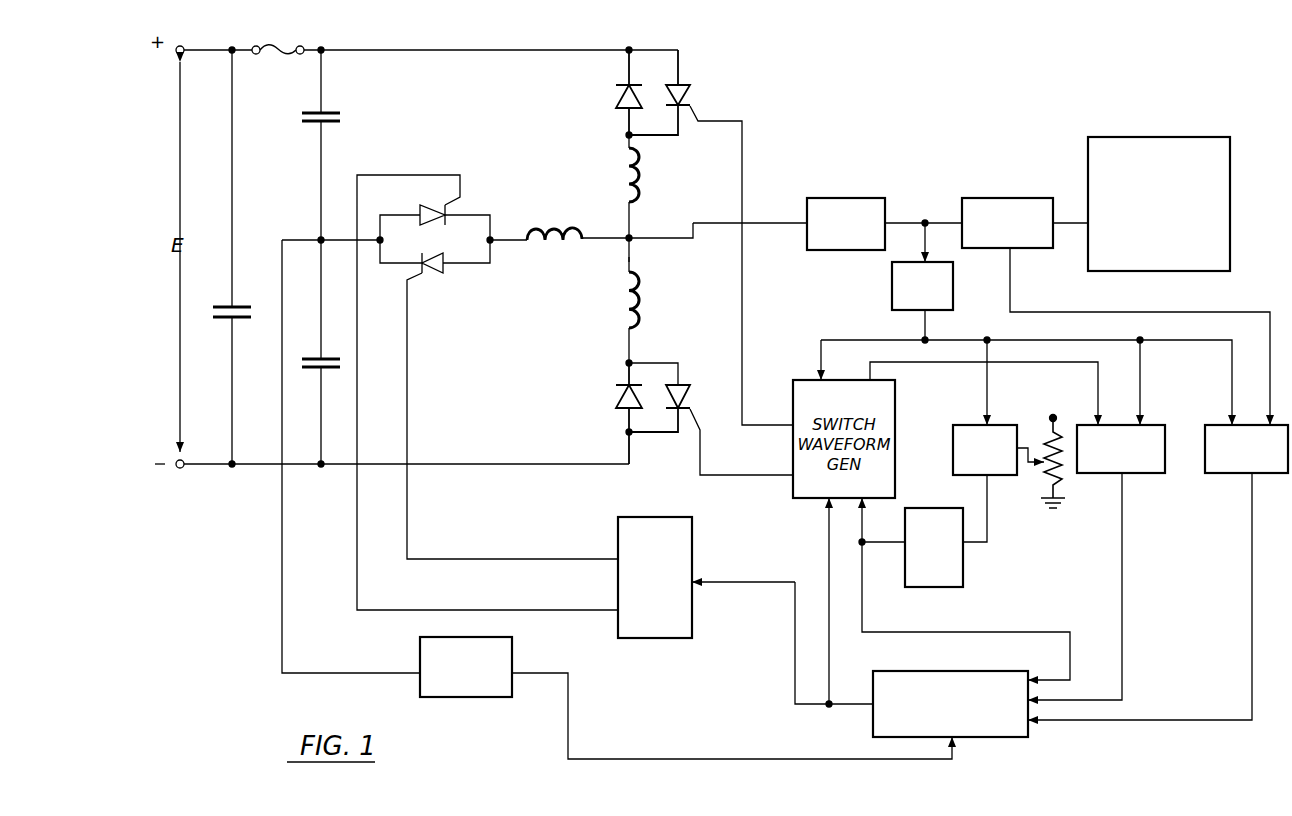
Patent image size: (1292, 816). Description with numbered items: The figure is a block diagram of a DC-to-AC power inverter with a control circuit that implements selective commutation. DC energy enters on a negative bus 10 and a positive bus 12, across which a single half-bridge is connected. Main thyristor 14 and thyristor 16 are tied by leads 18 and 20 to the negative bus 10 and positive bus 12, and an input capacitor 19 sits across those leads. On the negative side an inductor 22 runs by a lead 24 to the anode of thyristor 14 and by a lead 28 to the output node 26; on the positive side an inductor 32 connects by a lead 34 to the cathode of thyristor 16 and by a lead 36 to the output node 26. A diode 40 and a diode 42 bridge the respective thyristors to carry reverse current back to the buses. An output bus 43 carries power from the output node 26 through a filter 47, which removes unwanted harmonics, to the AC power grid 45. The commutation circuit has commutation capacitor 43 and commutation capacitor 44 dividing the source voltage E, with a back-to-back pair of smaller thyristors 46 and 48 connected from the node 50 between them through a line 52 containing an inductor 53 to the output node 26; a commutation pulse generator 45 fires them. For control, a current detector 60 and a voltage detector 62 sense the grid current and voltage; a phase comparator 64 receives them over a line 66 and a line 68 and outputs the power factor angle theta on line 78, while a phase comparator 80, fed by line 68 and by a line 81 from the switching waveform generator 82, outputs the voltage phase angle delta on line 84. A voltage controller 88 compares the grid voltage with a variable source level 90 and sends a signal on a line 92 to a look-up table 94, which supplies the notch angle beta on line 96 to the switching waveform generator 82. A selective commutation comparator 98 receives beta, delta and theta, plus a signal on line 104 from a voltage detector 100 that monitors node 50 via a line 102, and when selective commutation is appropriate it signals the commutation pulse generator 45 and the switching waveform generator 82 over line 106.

The negative bus 10 is at (181, 470).
The positive bus 12 is at (176, 58).
The thyristor 14 is at (690, 398).
The thyristor 16 is at (686, 90).
The lead 18 is at (468, 462).
The capacitor 19 is at (242, 305).
The lead 20 is at (434, 58).
The inductor 22 is at (646, 325).
The lead 24 is at (660, 362).
The output node 26 is at (640, 236).
The lead 28 is at (644, 282).
The inductor 32 is at (620, 164).
The lead 34 is at (704, 130).
The lead 36 is at (632, 238).
The diode 40 is at (614, 404).
The diode 42 is at (614, 98).
The output bus / commutation capacitor 43 is at (316, 356).
The commutation capacitor 44 is at (310, 126).
The AC power grid / commutation pulse generator 45 is at (1152, 137).
The thyristor 46 is at (448, 276).
The filter 47 is at (856, 198).
The thyristor 48 is at (418, 210).
The node 50 is at (320, 236).
The line 52 is at (604, 248).
The inductor 53 is at (566, 226).
The current detector 60 is at (1020, 198).
The voltage detector 62 is at (892, 288).
The phase comparator 64 is at (1212, 424).
The line 66 is at (1016, 298).
The line 68 is at (958, 340).
The line 78 is at (1250, 486).
The phase comparator 80 is at (1150, 418).
The line 81 is at (1068, 372).
The switching waveform generator 82 is at (806, 500).
The line 84 is at (1120, 526).
The voltage controller 88 is at (952, 442).
The variable source level 90 is at (1046, 480).
The line 92 is at (990, 522).
The look-up table 94 is at (966, 582).
The line 96 is at (886, 554).
The selective commutation comparator 98 is at (926, 670).
The voltage detector 100 is at (420, 658).
The line 102 is at (280, 572).
The line 104 is at (728, 758).
The line 106 is at (810, 706).